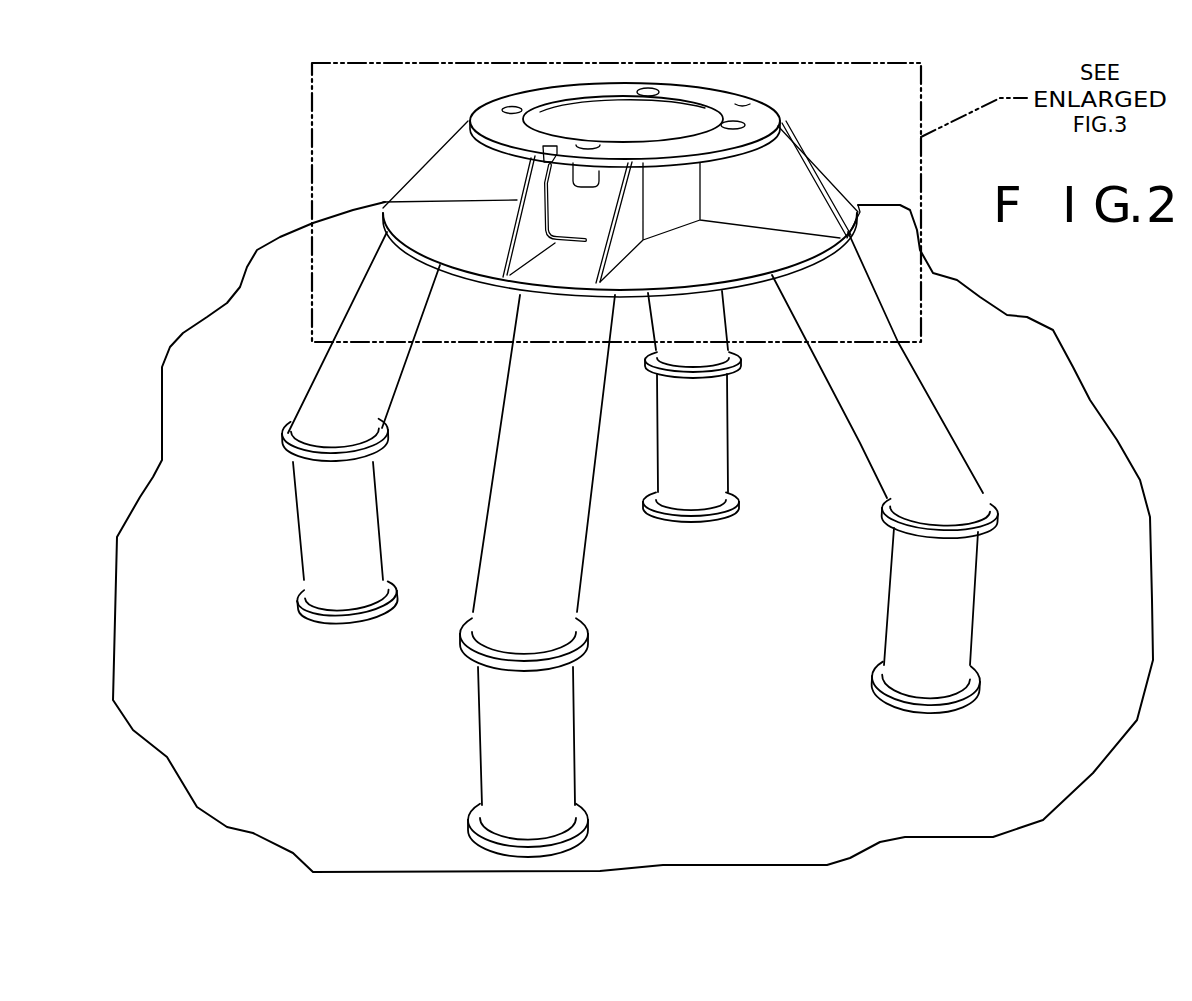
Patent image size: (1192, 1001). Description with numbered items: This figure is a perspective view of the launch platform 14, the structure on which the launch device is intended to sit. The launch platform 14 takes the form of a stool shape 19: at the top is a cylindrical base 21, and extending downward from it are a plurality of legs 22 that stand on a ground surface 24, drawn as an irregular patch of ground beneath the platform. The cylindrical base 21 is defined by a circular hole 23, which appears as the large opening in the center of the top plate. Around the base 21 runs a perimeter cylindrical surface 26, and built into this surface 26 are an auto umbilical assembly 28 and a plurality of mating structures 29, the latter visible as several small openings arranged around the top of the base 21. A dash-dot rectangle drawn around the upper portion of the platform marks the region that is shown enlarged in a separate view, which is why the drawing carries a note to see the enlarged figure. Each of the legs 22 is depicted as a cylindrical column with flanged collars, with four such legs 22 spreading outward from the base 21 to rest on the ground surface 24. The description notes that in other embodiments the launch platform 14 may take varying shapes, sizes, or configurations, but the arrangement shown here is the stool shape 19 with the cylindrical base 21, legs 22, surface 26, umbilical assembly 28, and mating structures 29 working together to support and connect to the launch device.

The launch platform 14 is at (823, 63).
The stool shape 19 is at (832, 197).
The cylindrical base 21 is at (485, 126).
The legs 22 is at (358, 590).
The circular hole 23 is at (660, 113).
The ground surface 24 is at (1108, 753).
The cylindrical surface 26 is at (733, 104).
The auto umbilical assembly 28 is at (556, 142).
The mating structures 29 is at (506, 108).